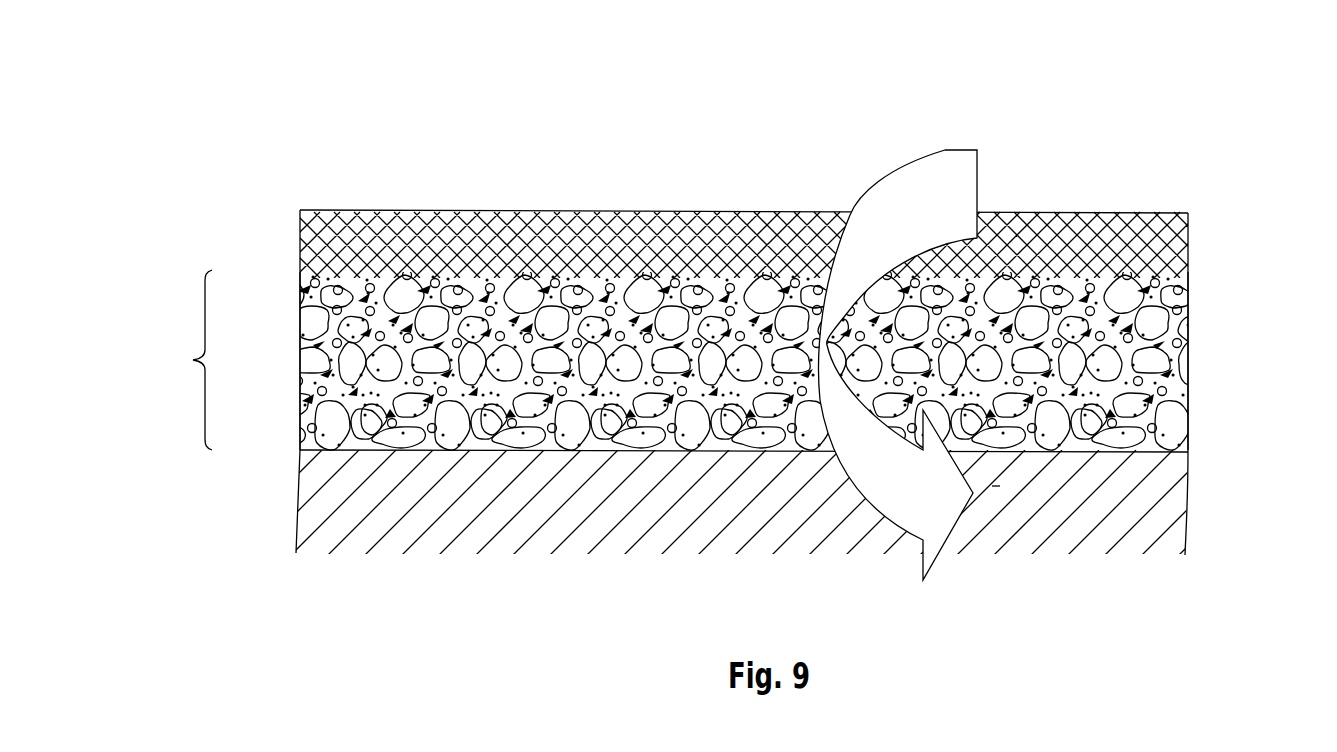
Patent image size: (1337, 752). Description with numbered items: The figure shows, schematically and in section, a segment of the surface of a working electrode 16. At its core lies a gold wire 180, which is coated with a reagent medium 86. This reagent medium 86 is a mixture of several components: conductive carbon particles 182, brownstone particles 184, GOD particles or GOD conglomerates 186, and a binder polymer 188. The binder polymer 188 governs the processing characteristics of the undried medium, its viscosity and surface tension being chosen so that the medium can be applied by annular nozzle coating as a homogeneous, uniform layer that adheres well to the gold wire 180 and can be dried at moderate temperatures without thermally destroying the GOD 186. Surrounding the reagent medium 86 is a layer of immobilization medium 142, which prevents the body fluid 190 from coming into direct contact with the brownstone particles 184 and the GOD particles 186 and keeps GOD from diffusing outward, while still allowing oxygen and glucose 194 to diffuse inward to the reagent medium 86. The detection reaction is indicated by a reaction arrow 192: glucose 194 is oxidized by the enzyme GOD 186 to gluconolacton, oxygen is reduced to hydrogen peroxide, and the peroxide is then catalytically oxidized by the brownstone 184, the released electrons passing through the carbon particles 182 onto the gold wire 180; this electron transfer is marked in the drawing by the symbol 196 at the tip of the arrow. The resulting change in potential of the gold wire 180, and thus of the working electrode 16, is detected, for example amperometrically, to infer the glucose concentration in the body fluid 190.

The working electrode 16 is at (1153, 157).
The reagent medium 86 is at (193, 360).
The immobilization medium 142 is at (631, 212).
The gold wire 180 is at (360, 504).
The conductive carbon particles 182 is at (1148, 393).
The brownstone particles 184 is at (300, 386).
The GOD particles 186 is at (490, 283).
The binder polymer 188 is at (710, 453).
The body fluid 190 is at (762, 110).
The reaction arrow 192 is at (890, 173).
The glucose 194 is at (953, 178).
The electron flow 196 is at (982, 507).